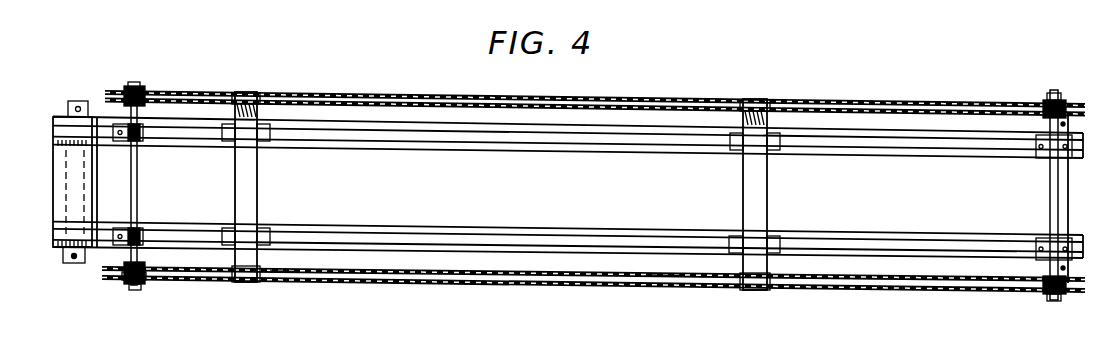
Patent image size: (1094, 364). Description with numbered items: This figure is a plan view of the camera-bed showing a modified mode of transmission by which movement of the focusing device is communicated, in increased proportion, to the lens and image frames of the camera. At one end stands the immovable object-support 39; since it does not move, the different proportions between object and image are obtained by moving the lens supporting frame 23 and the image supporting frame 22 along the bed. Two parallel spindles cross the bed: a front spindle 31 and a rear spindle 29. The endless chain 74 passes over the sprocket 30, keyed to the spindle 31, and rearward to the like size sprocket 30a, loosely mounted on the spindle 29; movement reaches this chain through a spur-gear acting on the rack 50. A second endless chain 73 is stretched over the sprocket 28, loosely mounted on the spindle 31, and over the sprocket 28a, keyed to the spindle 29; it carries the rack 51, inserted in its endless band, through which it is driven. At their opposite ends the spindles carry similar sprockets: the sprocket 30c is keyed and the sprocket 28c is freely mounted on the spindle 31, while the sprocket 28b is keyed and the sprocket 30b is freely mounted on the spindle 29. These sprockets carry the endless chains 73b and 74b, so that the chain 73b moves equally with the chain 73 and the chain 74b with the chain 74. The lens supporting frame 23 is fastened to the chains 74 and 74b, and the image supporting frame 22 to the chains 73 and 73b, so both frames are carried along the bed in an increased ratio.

The image supporting frame 22 is at (768, 197).
The lens supporting frame 23 is at (258, 188).
The sprocket 28 is at (104, 268).
The sprocket 28a is at (1044, 279).
The sprocket 28b is at (1047, 113).
The sprocket 28c is at (108, 92).
The spindle 29 is at (1050, 193).
The sprocket 30 is at (117, 280).
The sprocket 30a is at (1050, 292).
The sprocket 30b is at (1047, 98).
The sprocket 30c is at (131, 86).
The spindle 31 is at (135, 288).
The object-support 39 is at (97, 172).
The rack 50 is at (284, 282).
The rack 51 is at (663, 278).
The endless chain 73 is at (385, 275).
The endless chain 74 is at (545, 282).
The endless chain 73b is at (670, 110).
The endless chain 74b is at (690, 98).